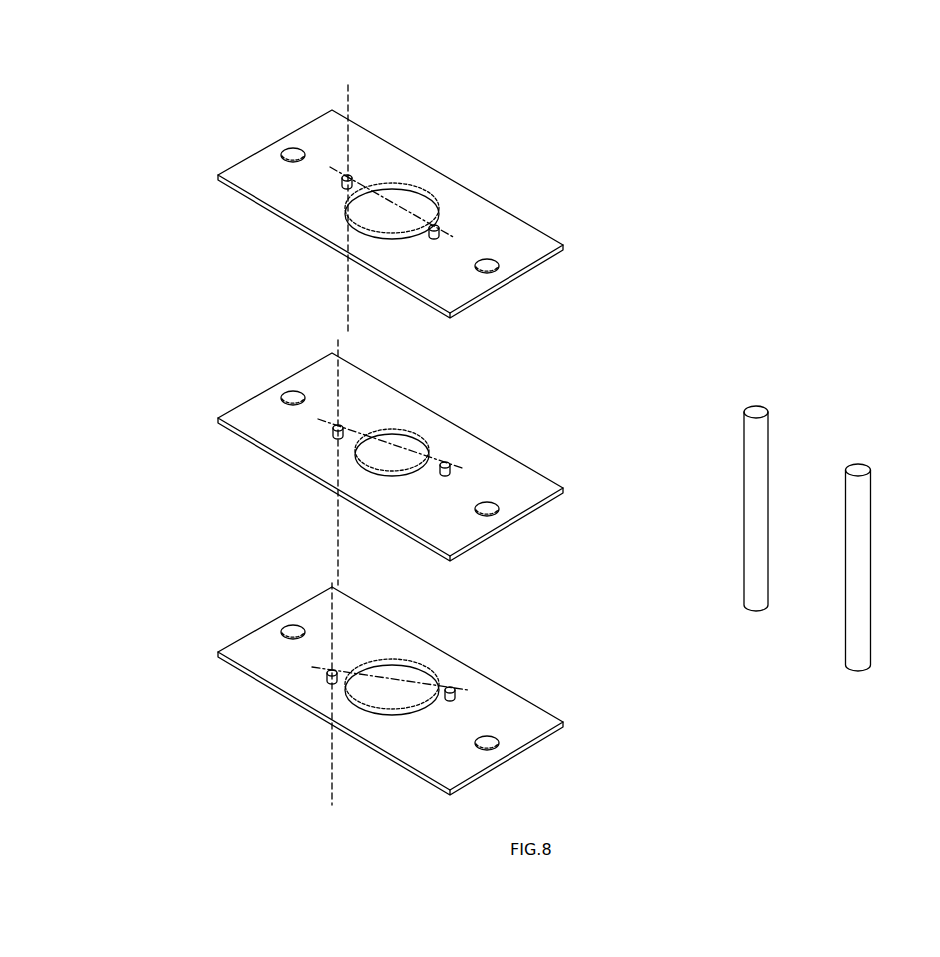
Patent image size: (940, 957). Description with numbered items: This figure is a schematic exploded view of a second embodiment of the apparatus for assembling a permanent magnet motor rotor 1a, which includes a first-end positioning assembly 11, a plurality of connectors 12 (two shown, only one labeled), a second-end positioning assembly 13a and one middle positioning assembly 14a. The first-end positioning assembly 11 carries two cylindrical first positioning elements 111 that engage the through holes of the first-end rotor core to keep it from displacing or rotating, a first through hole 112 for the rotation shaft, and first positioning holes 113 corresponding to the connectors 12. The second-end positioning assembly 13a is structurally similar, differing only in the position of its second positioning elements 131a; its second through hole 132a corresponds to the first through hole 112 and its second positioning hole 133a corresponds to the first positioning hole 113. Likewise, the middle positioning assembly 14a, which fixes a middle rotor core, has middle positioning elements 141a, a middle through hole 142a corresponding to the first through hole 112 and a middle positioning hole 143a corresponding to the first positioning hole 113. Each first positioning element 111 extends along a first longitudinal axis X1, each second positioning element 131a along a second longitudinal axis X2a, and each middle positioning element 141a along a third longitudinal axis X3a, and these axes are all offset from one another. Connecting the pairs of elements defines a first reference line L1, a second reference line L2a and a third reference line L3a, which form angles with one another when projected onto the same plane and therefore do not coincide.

The apparatus for assembling a permanent magnet motor rotor 1a is at (724, 266).
The first-end positioning assembly 11 is at (218, 176).
The first positioning element 111 is at (352, 174).
The first through hole 112 is at (383, 232).
The first positioning hole 113 is at (500, 267).
The first reference line L1 is at (392, 200).
The first longitudinal axis X1 is at (347, 286).
The connector 12 is at (862, 546).
The second-end positioning assembly 13a is at (218, 653).
The second positioning element 131a is at (328, 682).
The second through hole 132a is at (383, 702).
The second positioning hole 133a is at (500, 744).
The second reference line L2a is at (405, 680).
The second longitudinal axis X2a is at (331, 780).
The middle positioning assembly 14a is at (218, 419).
The middle positioning element 141a is at (336, 437).
The middle through hole 142a is at (383, 467).
The middle positioning hole 143a is at (500, 509).
The third reference line L3a is at (415, 443).
The third longitudinal axis X3a is at (337, 536).